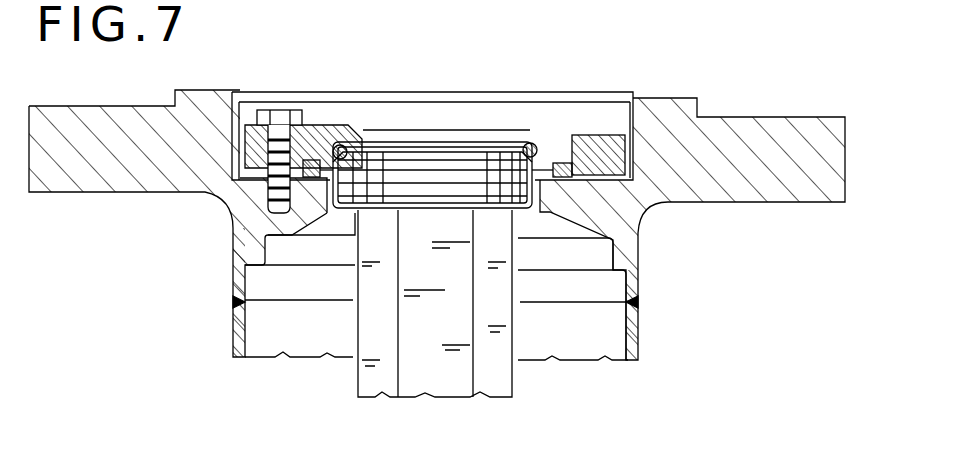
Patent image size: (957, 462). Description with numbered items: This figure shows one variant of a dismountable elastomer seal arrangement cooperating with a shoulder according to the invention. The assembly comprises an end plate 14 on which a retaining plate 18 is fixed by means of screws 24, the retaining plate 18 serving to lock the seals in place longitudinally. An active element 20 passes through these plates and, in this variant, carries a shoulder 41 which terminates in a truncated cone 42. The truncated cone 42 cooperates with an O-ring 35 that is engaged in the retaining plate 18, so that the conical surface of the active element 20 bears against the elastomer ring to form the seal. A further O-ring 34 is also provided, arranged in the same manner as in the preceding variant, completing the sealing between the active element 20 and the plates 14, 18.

The end plate 14 is at (708, 148).
The retaining plate 18 is at (600, 147).
The active element 20 is at (422, 347).
The screw 24 is at (277, 133).
The O-ring 34 is at (560, 163).
The O-ring 35 is at (533, 147).
The shoulder 41 is at (407, 183).
The truncated cone 42 is at (440, 157).